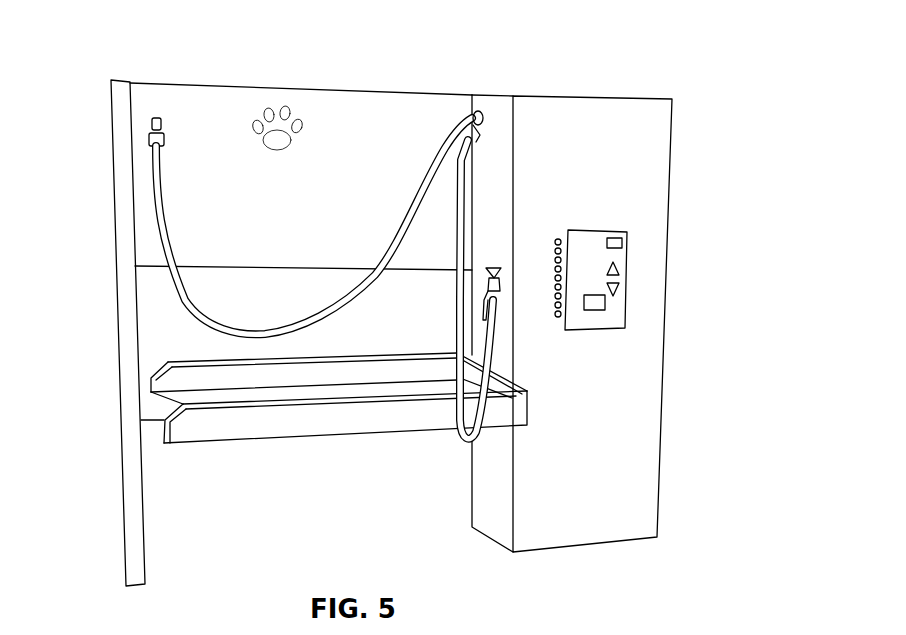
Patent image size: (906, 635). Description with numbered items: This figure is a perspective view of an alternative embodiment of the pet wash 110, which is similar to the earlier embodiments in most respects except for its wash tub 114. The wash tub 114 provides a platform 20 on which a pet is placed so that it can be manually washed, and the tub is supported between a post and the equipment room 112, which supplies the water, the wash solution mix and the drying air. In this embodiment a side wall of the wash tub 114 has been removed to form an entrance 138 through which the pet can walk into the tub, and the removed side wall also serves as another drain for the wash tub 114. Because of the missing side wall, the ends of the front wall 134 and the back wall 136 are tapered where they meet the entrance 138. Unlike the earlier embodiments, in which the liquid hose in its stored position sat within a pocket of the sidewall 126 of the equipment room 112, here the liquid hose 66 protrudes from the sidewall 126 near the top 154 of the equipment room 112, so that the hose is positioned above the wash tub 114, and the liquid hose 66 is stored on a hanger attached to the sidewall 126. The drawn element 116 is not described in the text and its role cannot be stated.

The pet wash 110 is at (665, 69).
The equipment room 112 is at (655, 247).
The top 154 is at (573, 95).
The tub assembly 116 is at (403, 456).
The wash tub 114 is at (298, 440).
The front wall 134 is at (177, 440).
The back wall 136 is at (150, 376).
The entrance 138 is at (158, 404).
The platform 20 is at (408, 385).
The liquid hose 66 is at (478, 111).
The sidewall 126 is at (503, 183).